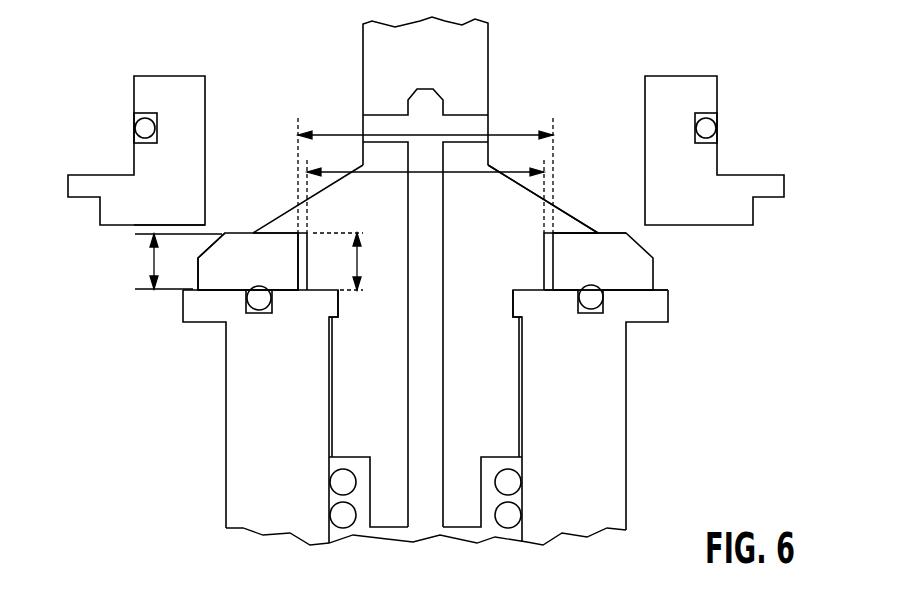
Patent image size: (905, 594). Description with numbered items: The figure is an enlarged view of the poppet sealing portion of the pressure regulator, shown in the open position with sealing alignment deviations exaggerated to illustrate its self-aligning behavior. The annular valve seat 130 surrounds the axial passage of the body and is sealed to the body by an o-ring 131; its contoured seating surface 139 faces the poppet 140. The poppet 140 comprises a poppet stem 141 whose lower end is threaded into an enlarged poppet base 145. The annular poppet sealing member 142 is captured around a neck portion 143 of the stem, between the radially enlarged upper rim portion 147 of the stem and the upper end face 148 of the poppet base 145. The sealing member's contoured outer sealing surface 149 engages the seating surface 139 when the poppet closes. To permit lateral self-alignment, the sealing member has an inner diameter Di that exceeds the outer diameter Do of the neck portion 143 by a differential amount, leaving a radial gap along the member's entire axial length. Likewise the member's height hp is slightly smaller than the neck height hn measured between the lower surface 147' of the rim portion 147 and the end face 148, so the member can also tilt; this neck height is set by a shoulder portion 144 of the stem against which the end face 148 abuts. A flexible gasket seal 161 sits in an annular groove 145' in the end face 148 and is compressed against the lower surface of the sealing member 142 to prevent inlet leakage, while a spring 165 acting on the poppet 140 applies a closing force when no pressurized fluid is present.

The valve seat 130 is at (123, 208).
The o-ring 131 is at (147, 122).
The seating surface 139 is at (205, 225).
The poppet 140 is at (565, 68).
The poppet stem 141 is at (472, 55).
The poppet sealing member 142 is at (645, 272).
The neck portion 143 is at (575, 291).
The shoulder portion 144 is at (530, 291).
The poppet base 145 is at (436, 417).
The annular groove 145' is at (484, 317).
The upper rim portion 147 is at (544, 184).
The lower surface of the rim portion 147' is at (589, 204).
The upper end face 148 is at (303, 250).
The outer sealing surface 149 is at (203, 249).
The gasket seal 161 is at (259, 302).
The spring 165 is at (512, 482).
The inner diameter Di is at (425, 168).
The outer diameter Do is at (425, 189).
The neck height hn is at (348, 261).
The height dimension hp is at (174, 261).